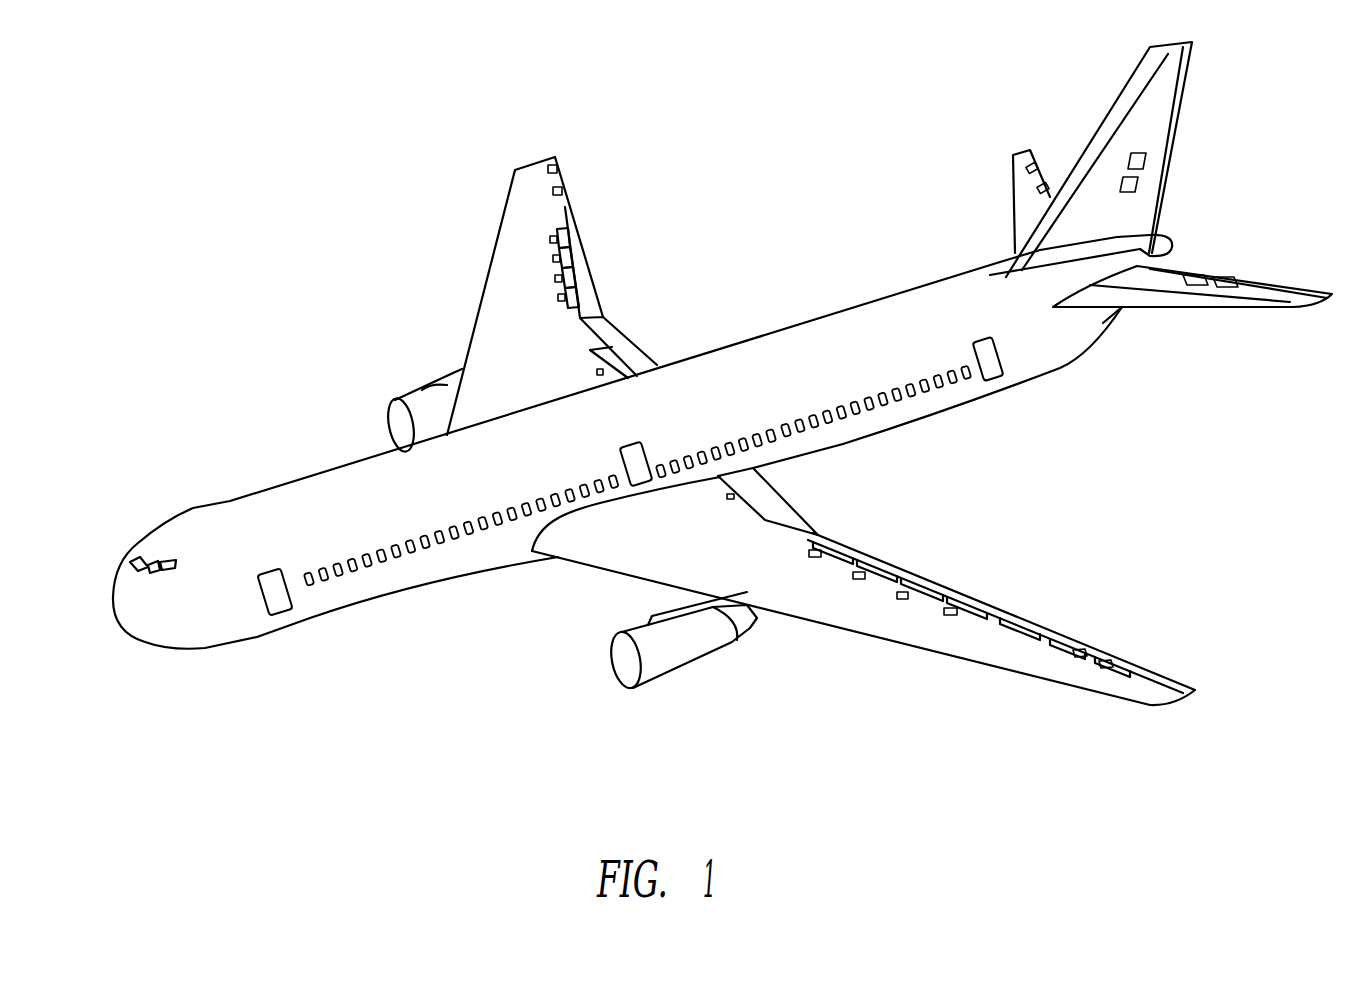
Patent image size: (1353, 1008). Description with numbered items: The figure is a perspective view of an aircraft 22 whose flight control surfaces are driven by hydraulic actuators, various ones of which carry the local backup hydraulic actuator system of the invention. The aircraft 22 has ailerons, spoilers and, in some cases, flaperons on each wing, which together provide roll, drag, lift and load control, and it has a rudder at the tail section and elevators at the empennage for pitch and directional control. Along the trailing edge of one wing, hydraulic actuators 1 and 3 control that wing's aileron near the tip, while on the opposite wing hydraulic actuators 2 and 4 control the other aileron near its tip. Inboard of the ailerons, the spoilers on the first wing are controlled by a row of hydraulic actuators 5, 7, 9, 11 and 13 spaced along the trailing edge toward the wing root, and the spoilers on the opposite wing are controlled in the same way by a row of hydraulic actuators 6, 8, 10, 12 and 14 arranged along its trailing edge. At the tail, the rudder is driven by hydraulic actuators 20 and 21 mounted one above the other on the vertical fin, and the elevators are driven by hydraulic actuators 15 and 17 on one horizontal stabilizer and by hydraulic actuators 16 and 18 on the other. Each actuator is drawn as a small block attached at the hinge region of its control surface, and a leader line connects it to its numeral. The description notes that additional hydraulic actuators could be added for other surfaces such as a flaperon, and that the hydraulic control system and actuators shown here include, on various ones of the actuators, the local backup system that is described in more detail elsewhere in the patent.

The hydraulic actuator 1 is at (1107, 661).
The hydraulic actuator 2 is at (557, 169).
The hydraulic actuator 3 is at (1082, 650).
The hydraulic actuator 4 is at (562, 191).
The hydraulic actuator 5 is at (945, 612).
The hydraulic actuator 6 is at (550, 240).
The hydraulic actuator 7 is at (898, 596).
The hydraulic actuator 8 is at (553, 259).
The hydraulic actuator 9 is at (856, 578).
The hydraulic actuator 10 is at (555, 278).
The hydraulic actuator 11 is at (814, 556).
The hydraulic actuator 12 is at (558, 299).
The hydraulic actuator 13 is at (729, 497).
The hydraulic actuator 14 is at (598, 373).
The hydraulic actuator 15 is at (1226, 279).
The hydraulic actuator 16 is at (1030, 162).
The hydraulic actuator 17 is at (1196, 276).
The hydraulic actuator 18 is at (1046, 185).
The hydraulic actuator 20 is at (1145, 161).
The hydraulic actuator 21 is at (1137, 183).
The aircraft 22 is at (158, 470).